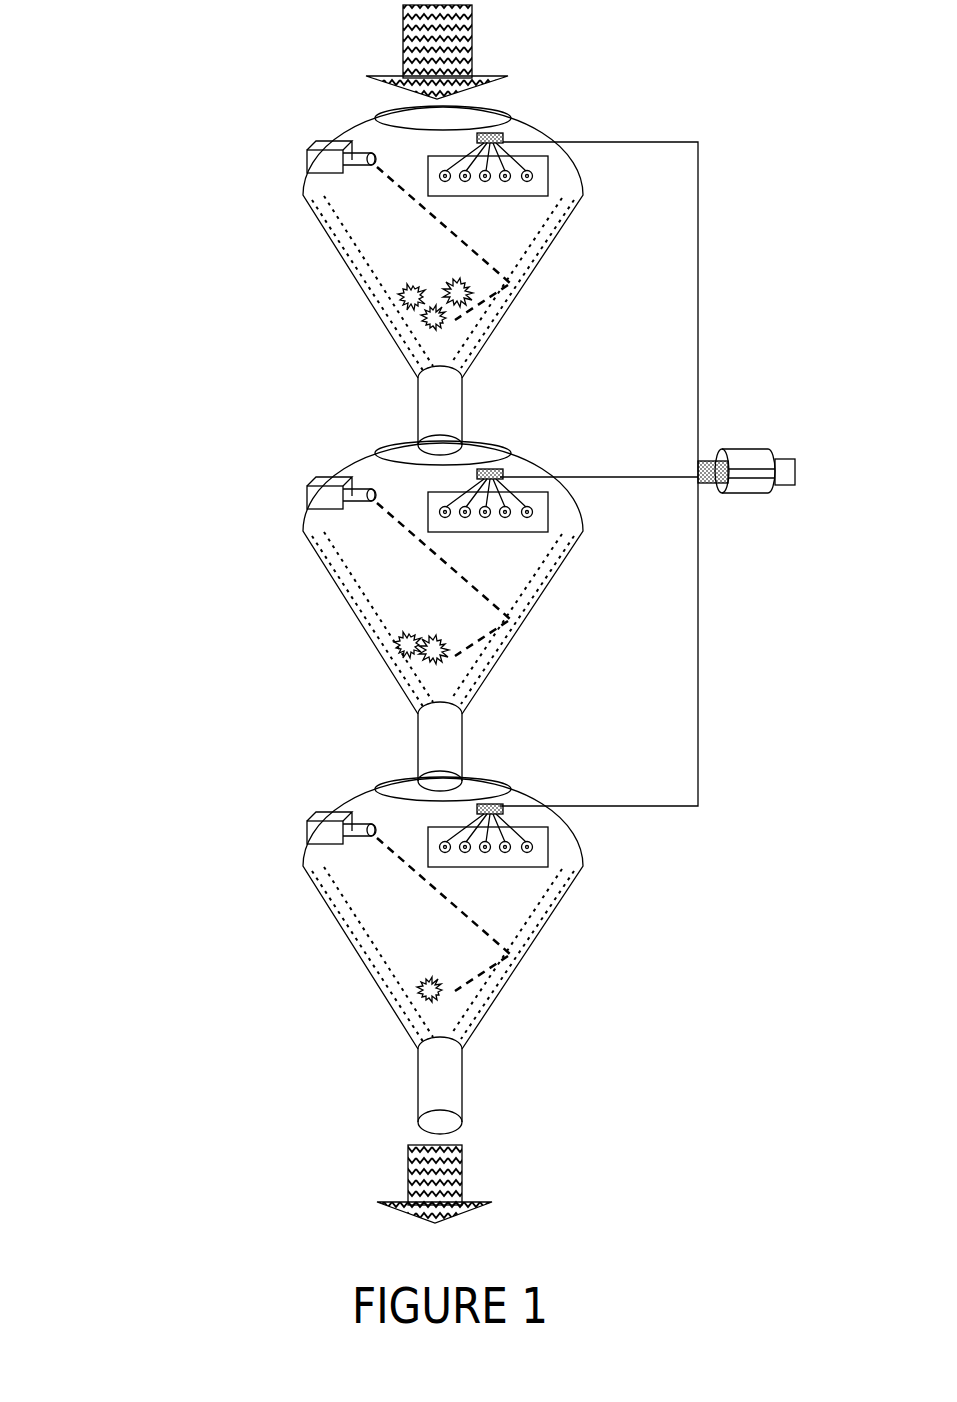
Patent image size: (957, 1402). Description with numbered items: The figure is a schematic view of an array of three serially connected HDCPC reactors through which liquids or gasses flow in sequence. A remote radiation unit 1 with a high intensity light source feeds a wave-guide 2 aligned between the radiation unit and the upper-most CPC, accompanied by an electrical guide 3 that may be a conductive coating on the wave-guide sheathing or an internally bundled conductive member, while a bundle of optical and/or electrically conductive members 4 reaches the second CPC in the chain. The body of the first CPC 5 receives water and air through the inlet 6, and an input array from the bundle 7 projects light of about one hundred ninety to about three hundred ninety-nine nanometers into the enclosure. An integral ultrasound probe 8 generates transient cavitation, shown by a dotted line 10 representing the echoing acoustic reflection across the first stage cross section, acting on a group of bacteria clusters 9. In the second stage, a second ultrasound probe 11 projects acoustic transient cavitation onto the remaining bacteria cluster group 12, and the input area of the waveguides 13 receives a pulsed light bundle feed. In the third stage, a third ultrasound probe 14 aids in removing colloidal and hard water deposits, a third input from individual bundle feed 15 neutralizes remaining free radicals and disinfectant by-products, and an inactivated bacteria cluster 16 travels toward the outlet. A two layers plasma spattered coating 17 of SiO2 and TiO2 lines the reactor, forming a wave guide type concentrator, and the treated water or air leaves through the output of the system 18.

The remote radiation unit 1 is at (760, 442).
The wave-guide 2 is at (700, 310).
The electrical guide 3 is at (700, 668).
The bundle of optical and/or electrically conductive members 4 is at (650, 474).
The body of the first CPC 5 is at (555, 125).
The inlet 6 is at (392, 104).
The input array from the bundle 7 is at (556, 172).
The integral ultrasound probe 8 is at (302, 165).
The group of bacteria clusters 9 is at (437, 298).
The dotted line 10 is at (440, 233).
The second ultrasound probe 11 is at (302, 503).
The remaining bacteria cluster group 12 is at (435, 627).
The input area of the waveguides 13 is at (487, 536).
The third ultrasound probe 14 is at (300, 837).
The third input from individual bundle feed 15 is at (487, 873).
The inactivated bacteria cluster 16 is at (433, 967).
The two layers plasma spattered coating 17 is at (328, 885).
The output of the system 18 is at (468, 1108).